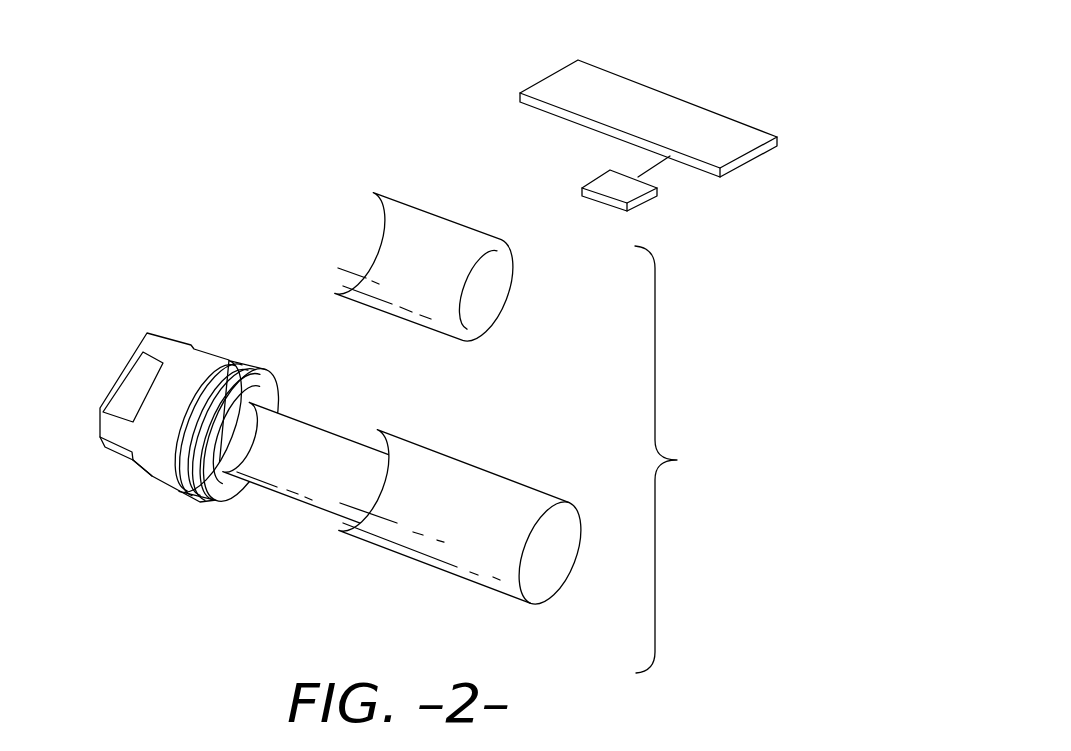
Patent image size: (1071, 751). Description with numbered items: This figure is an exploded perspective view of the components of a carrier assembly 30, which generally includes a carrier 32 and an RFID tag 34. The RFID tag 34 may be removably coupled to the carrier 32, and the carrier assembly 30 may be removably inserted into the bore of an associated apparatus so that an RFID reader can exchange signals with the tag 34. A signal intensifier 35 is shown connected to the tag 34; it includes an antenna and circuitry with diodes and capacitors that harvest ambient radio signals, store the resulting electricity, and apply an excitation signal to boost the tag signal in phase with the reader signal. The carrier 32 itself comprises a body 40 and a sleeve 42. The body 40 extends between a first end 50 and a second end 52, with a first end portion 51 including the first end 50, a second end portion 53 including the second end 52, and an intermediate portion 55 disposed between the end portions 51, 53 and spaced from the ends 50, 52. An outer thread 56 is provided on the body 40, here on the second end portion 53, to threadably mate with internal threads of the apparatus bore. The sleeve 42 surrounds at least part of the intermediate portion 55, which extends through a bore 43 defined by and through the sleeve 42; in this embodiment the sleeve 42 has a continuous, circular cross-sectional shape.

The carrier assembly 30 is at (163, 152).
The carrier 32 is at (676, 459).
The RFID tag 34 is at (662, 78).
The signal intensifier 35 is at (667, 203).
The body 40 is at (329, 478).
The sleeve 42 is at (436, 261).
The bore 43 is at (483, 296).
The first end 50 is at (548, 573).
The first end portion 51 is at (468, 537).
The second end 52 is at (144, 423).
The second end portion 53 is at (143, 491).
The intermediate portion 55 is at (286, 517).
The outer thread 56 is at (246, 362).